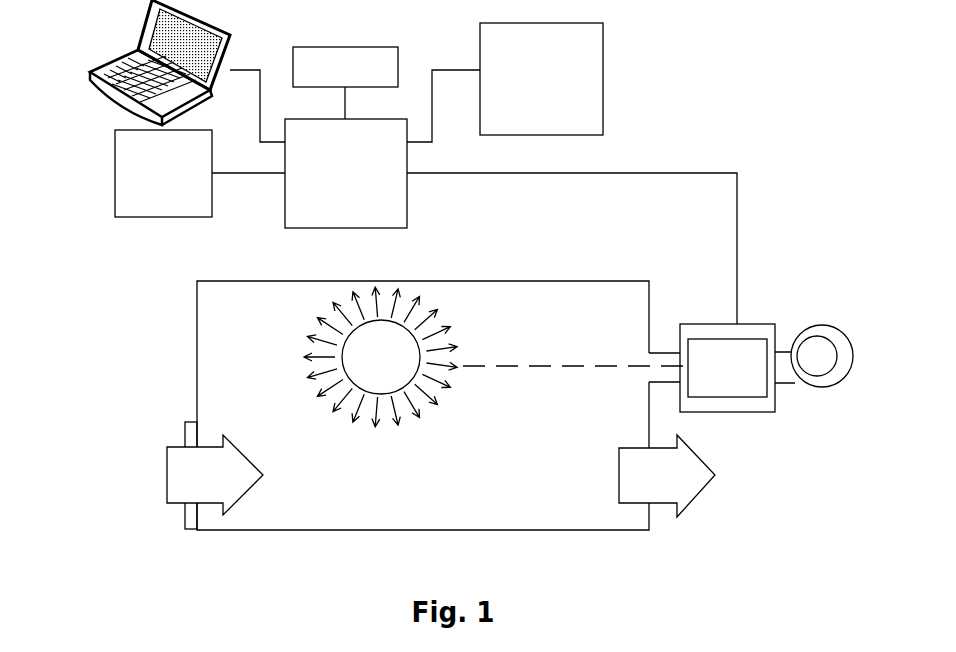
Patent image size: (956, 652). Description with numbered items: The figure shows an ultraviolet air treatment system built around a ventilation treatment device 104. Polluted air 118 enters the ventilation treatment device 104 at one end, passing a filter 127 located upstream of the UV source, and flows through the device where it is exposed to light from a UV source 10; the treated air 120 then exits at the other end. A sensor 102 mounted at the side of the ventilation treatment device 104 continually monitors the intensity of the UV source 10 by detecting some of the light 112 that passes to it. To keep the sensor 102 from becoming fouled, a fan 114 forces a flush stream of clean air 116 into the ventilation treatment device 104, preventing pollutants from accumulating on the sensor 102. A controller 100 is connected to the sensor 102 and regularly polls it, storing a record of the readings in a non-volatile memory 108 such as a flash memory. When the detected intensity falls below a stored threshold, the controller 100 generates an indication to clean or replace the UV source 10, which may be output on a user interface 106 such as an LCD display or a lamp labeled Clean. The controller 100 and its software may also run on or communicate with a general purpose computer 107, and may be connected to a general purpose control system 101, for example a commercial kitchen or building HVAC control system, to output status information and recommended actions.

The UV source 10 is at (380, 357).
The controller 100 is at (511, 221).
The general purpose control system 101 is at (505, 82).
The sensor 102 is at (737, 368).
The ventilation treatment device 104 is at (423, 405).
The user interface 106 is at (200, 173).
The general purpose computer 107 is at (122, 107).
The non-volatile memory 108 is at (343, 47).
The light 112 is at (530, 366).
The fan 114 is at (827, 330).
The flush stream of clean air 116 is at (643, 372).
The polluted air 118 is at (167, 487).
The treated air 120 is at (637, 503).
The filter 127 is at (185, 425).